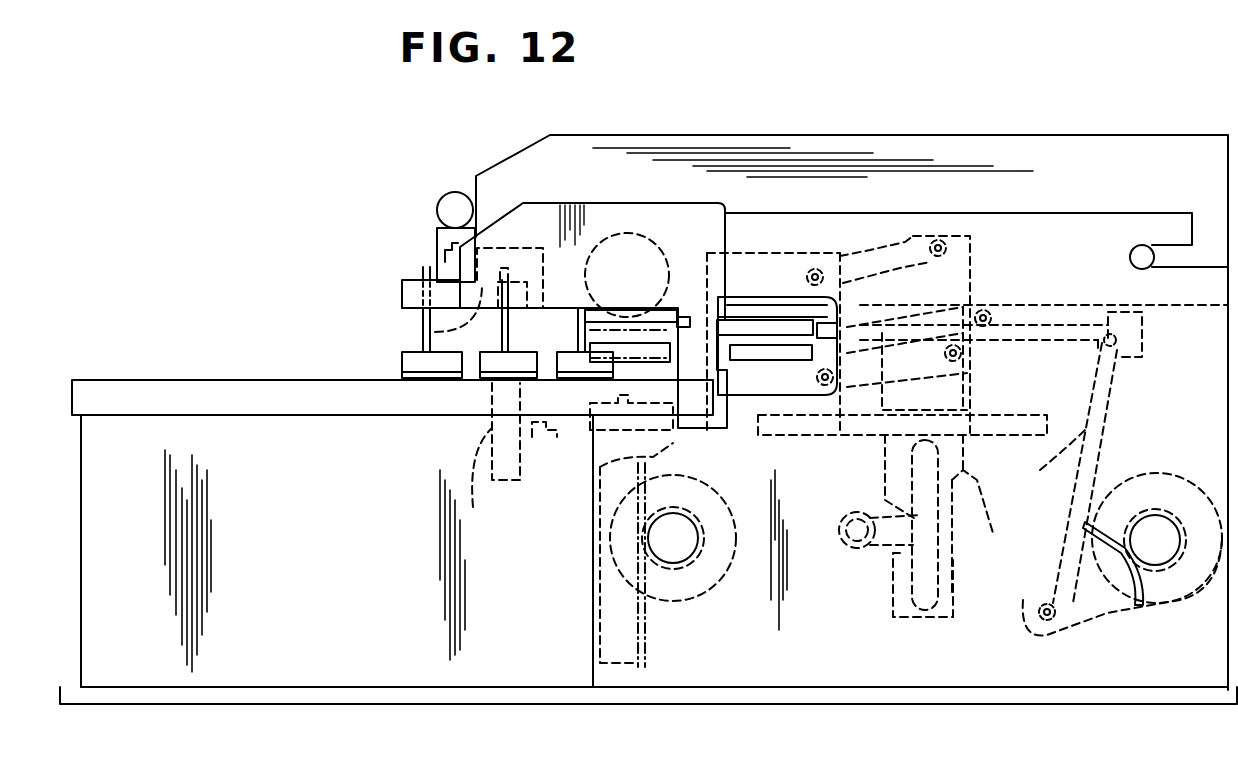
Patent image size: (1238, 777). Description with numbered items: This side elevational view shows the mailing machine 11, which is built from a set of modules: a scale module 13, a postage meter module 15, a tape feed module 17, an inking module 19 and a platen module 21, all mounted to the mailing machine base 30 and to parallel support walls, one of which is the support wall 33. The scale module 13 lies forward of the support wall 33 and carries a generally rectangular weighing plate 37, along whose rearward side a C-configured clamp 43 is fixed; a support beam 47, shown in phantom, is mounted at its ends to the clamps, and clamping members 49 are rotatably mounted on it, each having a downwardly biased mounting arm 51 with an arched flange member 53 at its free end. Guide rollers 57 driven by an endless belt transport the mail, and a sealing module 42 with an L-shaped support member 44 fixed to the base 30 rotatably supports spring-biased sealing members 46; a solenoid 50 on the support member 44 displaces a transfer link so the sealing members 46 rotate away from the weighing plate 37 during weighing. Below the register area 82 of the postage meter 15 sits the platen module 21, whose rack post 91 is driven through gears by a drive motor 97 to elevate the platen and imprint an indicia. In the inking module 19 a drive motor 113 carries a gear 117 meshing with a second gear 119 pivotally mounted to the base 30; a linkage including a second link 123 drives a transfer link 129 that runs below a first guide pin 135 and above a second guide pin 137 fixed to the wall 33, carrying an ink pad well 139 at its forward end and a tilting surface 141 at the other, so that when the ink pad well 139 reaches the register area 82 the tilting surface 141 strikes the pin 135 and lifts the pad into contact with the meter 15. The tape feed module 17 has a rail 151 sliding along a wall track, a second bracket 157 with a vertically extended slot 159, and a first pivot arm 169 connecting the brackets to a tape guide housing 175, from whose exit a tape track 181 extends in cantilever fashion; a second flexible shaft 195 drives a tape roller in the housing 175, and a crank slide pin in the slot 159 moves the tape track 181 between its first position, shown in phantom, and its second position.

The mailing machine 11 is at (187, 207).
The scale module 13 is at (185, 346).
The postage meter module 15 is at (939, 111).
The tape feed module 17 is at (988, 242).
The inking module 19 is at (1119, 404).
The platen module 21 is at (585, 587).
The base 30 is at (973, 687).
The support wall 33 is at (1135, 212).
The weighing plate 37 is at (290, 380).
The sealing module 42 is at (386, 251).
The first C-configuration clamp 43 is at (610, 203).
The L-shaped support member 44 is at (398, 290).
The sealing members 46 is at (383, 376).
The support beam 47 is at (405, 330).
The clamping members 49 is at (519, 259).
The solenoid 50 is at (440, 190).
The mounting arm 51 is at (508, 345).
The arched flange member 53 is at (477, 367).
The guide rollers 57 is at (482, 477).
The register area 82 is at (628, 316).
The first rack post 91 is at (597, 610).
The drive motor 97 is at (730, 570).
The drive motor 113 is at (1183, 472).
The gear 117 is at (1178, 600).
The second gear 119 is at (1112, 620).
The second link 123 is at (1040, 457).
The first transfer link 129 is at (1058, 323).
The first guide pin 135 is at (1002, 303).
The second guide pin 137 is at (853, 350).
The ink pad well 139 is at (772, 317).
The tilting surface 141 is at (1142, 338).
The rail 151 is at (1020, 417).
The second bracket 157 is at (975, 490).
The vertically extended slot 159 is at (913, 590).
The first pivot arm 169 is at (913, 236).
The tape guide housing 175 is at (805, 262).
The tape track 181 is at (666, 374).
The second flexible shaft 195 is at (607, 440).